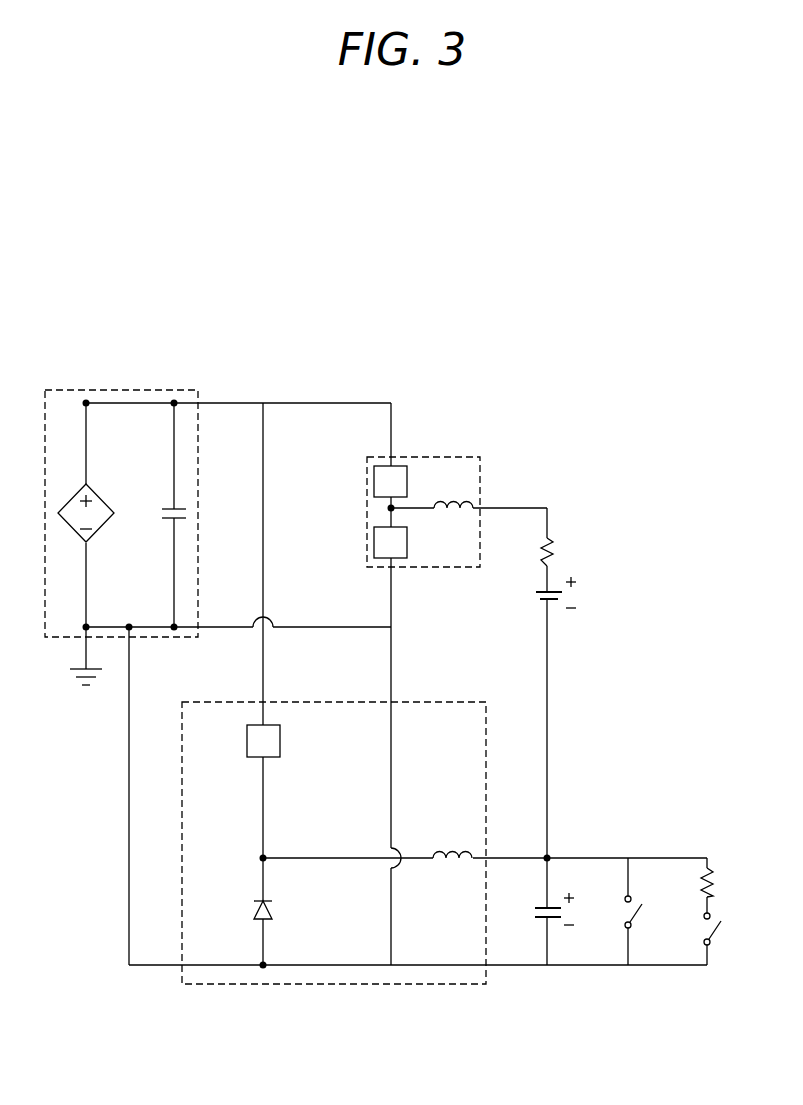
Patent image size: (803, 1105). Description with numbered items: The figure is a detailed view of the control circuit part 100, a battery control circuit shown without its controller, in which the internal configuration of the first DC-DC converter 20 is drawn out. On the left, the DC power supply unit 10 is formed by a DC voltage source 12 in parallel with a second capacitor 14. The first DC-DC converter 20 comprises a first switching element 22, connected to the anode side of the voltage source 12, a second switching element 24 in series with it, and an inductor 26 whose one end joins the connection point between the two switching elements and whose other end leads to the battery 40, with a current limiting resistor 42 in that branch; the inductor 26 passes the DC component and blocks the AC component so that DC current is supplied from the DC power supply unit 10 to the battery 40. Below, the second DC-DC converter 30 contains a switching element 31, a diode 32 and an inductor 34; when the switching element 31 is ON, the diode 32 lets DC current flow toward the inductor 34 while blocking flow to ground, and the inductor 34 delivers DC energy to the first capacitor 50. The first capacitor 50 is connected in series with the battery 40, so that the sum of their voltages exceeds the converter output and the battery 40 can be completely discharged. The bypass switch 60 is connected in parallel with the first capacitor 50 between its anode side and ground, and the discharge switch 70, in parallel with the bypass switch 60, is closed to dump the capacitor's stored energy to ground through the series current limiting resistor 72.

The control circuit part 100 is at (62, 308).
The DC power supply unit 10 is at (122, 390).
The DC voltage source 12 is at (103, 498).
The second capacitor 14 is at (162, 515).
The first DC-DC converter 20 is at (445, 457).
The first switching element 22 is at (374, 480).
The second switching element 24 is at (374, 545).
The inductor 26 is at (461, 500).
The second DC-DC converter 30 is at (372, 985).
The switching element 31 is at (247, 742).
The diode 32 is at (252, 908).
The inductor 34 is at (460, 848).
The battery 40 is at (537, 597).
The current limiting resistor 42 is at (540, 554).
The first capacitor 50 is at (535, 910).
The bypass switch 60 is at (643, 910).
The discharge switch 70 is at (722, 928).
The resistor 72 is at (715, 880).